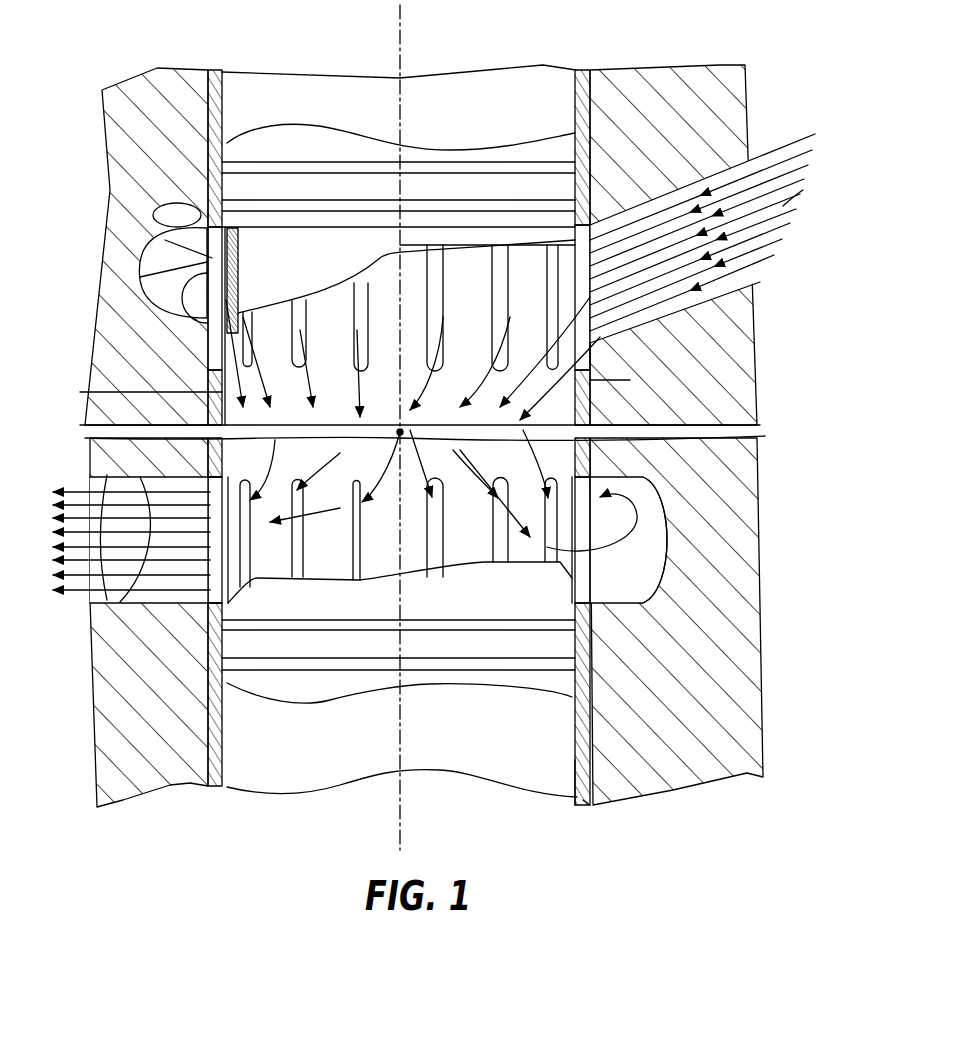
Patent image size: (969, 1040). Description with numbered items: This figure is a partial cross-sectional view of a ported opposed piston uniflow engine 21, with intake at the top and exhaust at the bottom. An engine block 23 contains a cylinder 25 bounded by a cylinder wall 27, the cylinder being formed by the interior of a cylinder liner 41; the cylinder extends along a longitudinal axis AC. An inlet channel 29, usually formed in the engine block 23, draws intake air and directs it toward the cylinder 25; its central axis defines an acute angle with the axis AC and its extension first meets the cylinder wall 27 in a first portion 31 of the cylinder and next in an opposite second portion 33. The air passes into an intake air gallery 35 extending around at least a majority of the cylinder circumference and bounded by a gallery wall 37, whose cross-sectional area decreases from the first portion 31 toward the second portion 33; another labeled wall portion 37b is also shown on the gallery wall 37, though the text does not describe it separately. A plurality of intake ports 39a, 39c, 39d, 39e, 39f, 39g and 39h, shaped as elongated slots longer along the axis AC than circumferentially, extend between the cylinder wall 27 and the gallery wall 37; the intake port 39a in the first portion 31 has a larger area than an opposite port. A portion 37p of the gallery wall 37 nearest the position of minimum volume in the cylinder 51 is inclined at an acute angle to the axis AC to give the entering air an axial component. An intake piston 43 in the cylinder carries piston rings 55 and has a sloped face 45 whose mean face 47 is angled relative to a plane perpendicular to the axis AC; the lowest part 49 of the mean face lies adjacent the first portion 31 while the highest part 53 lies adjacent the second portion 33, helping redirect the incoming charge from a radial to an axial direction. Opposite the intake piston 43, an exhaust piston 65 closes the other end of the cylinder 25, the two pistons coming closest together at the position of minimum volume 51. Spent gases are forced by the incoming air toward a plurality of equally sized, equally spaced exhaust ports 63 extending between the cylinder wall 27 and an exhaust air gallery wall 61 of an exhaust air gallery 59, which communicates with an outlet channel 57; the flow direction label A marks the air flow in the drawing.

The ported uniflow engine 21 is at (695, 822).
The engine block 23 is at (144, 720).
The cylinder 25 is at (359, 743).
The cylinder wall 27 is at (580, 762).
The inlet channel 29 is at (748, 168).
The first portion of the cylinder 31 is at (632, 381).
The second portion of the cylinder 33 is at (141, 387).
The intake air gallery 35 is at (212, 250).
The gallery wall 37 is at (165, 238).
The pocket base 37b is at (140, 277).
The portion of the gallery wall 37p is at (183, 298).
The intake port 39a is at (640, 352).
The intake port 39c is at (543, 260).
The intake port 39d is at (485, 268).
The intake port 39e is at (435, 245).
The intake port 39f is at (368, 282).
The intake port 39g is at (318, 298).
The intake port 39h is at (285, 300).
The cylinder liner 41 is at (583, 800).
The piston 43 is at (300, 265).
The face of the piston 45 is at (391, 193).
The mean face of the piston 47 is at (455, 270).
The lowest part of the mean face 49 is at (577, 207).
The position of minimum volume in the cylinder 51 is at (398, 428).
The highest part of the mean face 53 is at (240, 310).
The piston rings 55 is at (270, 200).
The outlet channel 57 is at (110, 476).
The exhaust air gallery 59 is at (668, 570).
The exhaust air gallery wall 61 is at (655, 598).
The exhaust ports 63 is at (235, 553).
The exhaust piston 65 is at (451, 608).
The flow direction A is at (798, 192).
The longitudinal axis of the cylinder AC is at (405, 35).